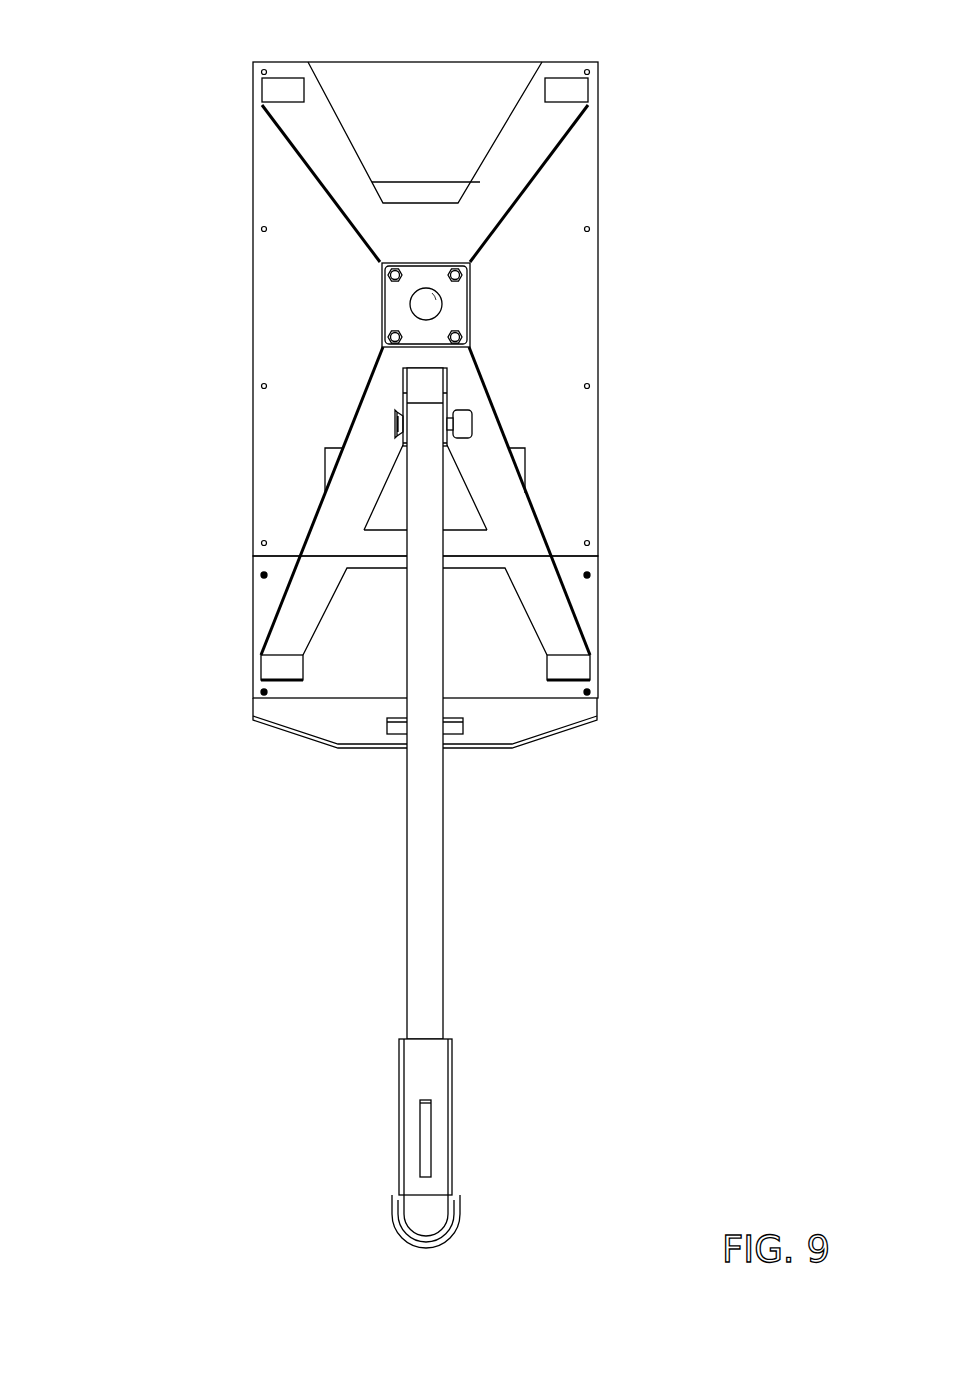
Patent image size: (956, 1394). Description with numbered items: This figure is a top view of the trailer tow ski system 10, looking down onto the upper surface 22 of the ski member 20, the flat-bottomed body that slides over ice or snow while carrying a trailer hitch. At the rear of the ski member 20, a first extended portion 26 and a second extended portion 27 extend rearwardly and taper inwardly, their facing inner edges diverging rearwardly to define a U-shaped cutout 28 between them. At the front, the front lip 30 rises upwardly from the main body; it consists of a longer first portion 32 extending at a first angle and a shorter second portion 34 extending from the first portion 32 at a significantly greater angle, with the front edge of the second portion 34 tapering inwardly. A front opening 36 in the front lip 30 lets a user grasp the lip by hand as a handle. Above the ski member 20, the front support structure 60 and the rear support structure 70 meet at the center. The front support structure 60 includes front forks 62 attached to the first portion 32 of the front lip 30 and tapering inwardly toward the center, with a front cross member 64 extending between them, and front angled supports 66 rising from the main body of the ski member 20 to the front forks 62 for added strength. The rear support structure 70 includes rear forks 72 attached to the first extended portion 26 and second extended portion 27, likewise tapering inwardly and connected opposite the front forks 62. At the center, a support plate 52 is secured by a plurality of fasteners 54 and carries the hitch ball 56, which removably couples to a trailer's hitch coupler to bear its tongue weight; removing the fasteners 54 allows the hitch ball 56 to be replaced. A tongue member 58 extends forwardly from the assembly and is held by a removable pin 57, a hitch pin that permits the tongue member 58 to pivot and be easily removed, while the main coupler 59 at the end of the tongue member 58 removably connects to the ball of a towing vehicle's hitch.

The trailer tow ski system 10 is at (396, 637).
The ski member 20 is at (441, 438).
The upper surface 22 is at (547, 333).
The first extended portion 26 is at (290, 62).
The second extended portion 27 is at (568, 62).
The cutout 28 is at (407, 182).
The front lip 30 is at (250, 664).
The first portion 32 is at (450, 741).
The second portion 34 is at (483, 749).
The front opening 36 is at (386, 727).
The support plate 52 is at (419, 304).
The fasteners 54 is at (382, 280).
The hitch ball 56 is at (413, 293).
The removable pin 57 is at (396, 413).
The tongue member 58 is at (409, 781).
The main coupler 59 is at (460, 1214).
The front support structure 60 is at (421, 513).
The front forks 62 is at (292, 622).
The front cross member 64 is at (386, 526).
The front angled supports 66 is at (325, 468).
The rear support structure 70 is at (437, 144).
The rear forks 72 is at (337, 165).